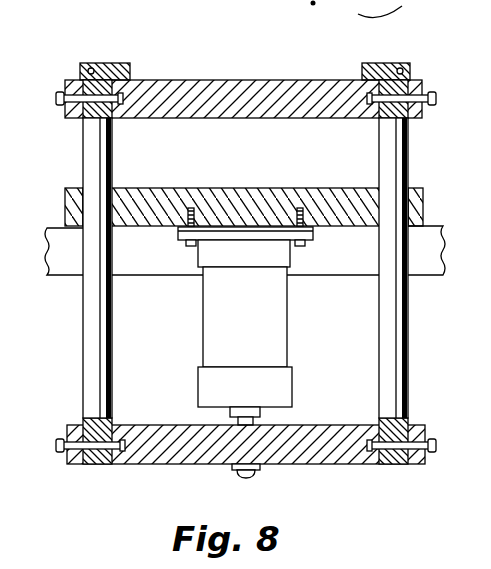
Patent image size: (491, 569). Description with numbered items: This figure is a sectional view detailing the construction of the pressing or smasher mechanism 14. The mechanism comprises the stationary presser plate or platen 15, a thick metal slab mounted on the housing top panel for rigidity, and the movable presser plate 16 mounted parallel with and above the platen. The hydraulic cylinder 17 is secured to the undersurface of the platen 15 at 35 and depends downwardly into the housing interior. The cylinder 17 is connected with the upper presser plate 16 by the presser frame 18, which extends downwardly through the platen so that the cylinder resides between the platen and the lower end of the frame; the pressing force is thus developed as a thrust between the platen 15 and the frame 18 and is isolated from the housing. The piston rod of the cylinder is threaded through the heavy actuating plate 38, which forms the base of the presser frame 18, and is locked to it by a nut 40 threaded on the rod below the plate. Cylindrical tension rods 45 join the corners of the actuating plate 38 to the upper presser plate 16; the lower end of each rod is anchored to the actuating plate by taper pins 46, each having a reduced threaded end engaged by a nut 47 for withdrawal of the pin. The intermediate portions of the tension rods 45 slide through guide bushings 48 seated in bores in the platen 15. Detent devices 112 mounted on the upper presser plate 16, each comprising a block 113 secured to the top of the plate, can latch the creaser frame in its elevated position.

The pressing mechanism 14 is at (286, 77).
The stationary presser plate or platen 15 is at (262, 196).
The movable presser plate 16 is at (232, 88).
The hydraulic cylinder 17 is at (274, 322).
The presser frame 18 is at (413, 357).
The cylinder securing means 35 is at (189, 245).
The actuating plate 38 is at (343, 450).
The nut 40 is at (255, 470).
The tension rods 45 is at (104, 162).
The taper pins 46 is at (93, 104).
The nut 47 is at (60, 96).
The guide bushings 48 is at (65, 205).
The detent devices 112 is at (107, 58).
The block 113 is at (388, 63).